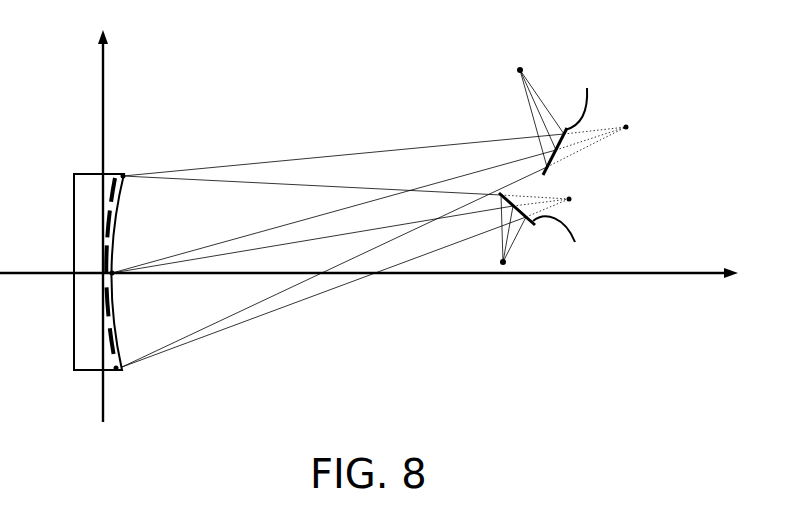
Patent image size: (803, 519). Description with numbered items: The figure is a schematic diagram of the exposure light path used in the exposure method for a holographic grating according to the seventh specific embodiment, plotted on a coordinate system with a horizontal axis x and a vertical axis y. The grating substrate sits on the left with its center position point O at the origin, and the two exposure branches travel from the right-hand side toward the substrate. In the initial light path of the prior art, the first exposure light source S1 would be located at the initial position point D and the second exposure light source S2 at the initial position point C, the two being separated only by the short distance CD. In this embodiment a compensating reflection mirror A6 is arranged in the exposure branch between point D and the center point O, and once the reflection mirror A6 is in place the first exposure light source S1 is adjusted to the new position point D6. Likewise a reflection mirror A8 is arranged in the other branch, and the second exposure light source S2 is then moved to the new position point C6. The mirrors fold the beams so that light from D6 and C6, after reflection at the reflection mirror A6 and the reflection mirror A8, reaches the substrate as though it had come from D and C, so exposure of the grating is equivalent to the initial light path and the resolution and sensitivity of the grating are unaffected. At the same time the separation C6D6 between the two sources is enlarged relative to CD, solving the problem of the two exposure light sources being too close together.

The first exposure light source S1 is at (527, 108).
The second exposure light source S2 is at (516, 233).
The new position point of first exposure light source D6 is at (547, 111).
The new position point of second exposure light source C6 is at (502, 232).
The reflection mirror A6 is at (585, 95).
The reflection mirror A8 is at (566, 235).
The initial position point of first exposure light source D is at (595, 142).
The initial position point of second exposure light source C is at (543, 203).
The center position point of grating substrate O is at (100, 272).
The x axis x is at (369, 287).
The y axis y is at (94, 226).